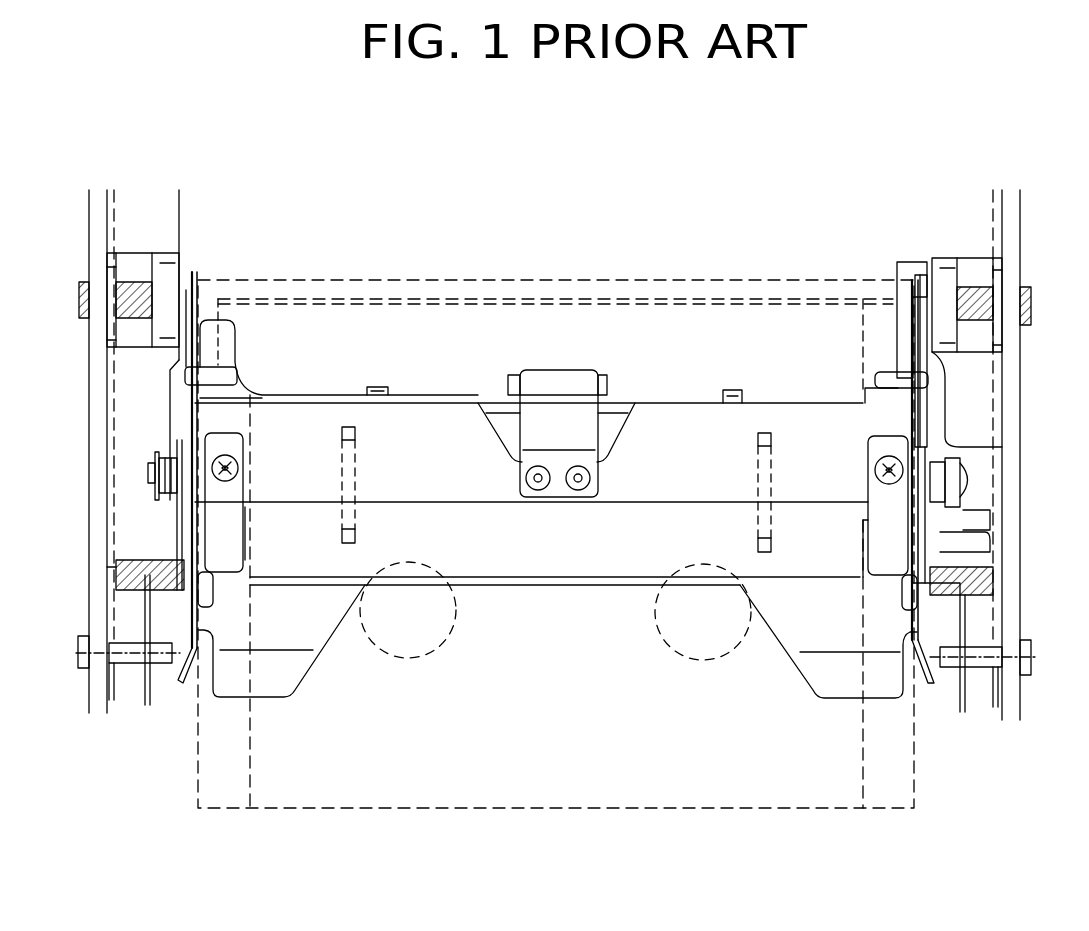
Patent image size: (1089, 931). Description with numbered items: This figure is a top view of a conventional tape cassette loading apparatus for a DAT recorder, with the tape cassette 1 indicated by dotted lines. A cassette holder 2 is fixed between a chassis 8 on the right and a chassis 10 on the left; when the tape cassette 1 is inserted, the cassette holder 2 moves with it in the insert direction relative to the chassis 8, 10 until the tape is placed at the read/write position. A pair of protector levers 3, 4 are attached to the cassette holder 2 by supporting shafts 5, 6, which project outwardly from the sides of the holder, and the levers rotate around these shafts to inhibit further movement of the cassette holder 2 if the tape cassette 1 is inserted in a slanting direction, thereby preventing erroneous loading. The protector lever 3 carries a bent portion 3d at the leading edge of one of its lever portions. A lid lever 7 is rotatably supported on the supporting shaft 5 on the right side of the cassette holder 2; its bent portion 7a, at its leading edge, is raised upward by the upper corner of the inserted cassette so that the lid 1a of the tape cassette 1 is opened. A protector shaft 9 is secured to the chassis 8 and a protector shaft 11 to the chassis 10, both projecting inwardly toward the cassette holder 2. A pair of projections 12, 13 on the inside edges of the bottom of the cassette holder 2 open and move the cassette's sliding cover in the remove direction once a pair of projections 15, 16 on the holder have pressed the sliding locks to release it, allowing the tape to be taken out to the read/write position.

The tape cassette 1 is at (916, 780).
The lid 1a is at (610, 279).
The cassette holder 2 is at (447, 402).
The protector lever 3 is at (928, 432).
The bent portion 3d is at (882, 376).
The protector lever 4 is at (172, 428).
The supporting shaft 5 is at (972, 475).
The supporting shaft 6 is at (148, 475).
The lid lever 7 is at (928, 378).
The bent portion 7a is at (904, 268).
The chassis 8 is at (1010, 238).
The protector shaft 9 is at (985, 672).
The chassis 10 is at (96, 222).
The protector shaft 11 is at (128, 665).
The projection 12 is at (732, 389).
The projection 13 is at (375, 386).
The projection 15 is at (772, 437).
The projection 16 is at (342, 433).